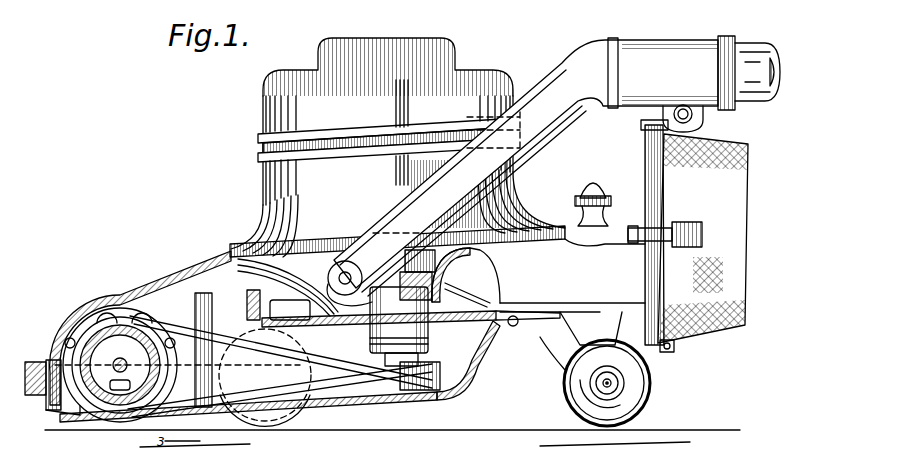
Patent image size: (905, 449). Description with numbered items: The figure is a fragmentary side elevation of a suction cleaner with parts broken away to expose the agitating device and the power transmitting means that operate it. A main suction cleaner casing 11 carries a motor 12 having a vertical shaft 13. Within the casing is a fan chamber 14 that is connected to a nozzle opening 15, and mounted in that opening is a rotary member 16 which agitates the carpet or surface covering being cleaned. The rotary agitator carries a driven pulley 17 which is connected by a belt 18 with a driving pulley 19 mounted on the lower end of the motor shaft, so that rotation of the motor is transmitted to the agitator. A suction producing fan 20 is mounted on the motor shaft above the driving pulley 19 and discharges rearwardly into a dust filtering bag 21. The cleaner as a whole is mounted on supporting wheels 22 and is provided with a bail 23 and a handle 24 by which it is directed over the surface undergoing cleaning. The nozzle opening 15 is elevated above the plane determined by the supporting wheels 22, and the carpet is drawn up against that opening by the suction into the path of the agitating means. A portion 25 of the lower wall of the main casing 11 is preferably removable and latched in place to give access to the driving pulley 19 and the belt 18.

The main suction cleaner casing 11 is at (213, 270).
The motor 12 is at (265, 188).
The vertical shaft 13 is at (390, 278).
The fan chamber 14 is at (457, 305).
The nozzle opening 15 is at (83, 420).
The rotary member 16 is at (98, 320).
The driven pulley 17 is at (163, 320).
The belt 18 is at (374, 407).
The driving pulley 19 is at (434, 394).
The suction producing fan 20 is at (483, 277).
The dust filtering bag 21 is at (727, 290).
The supporting wheels 22 is at (304, 418).
The bail 23 is at (552, 77).
The handle 24 is at (757, 50).
The removable portion of lower casing wall 25 is at (445, 372).